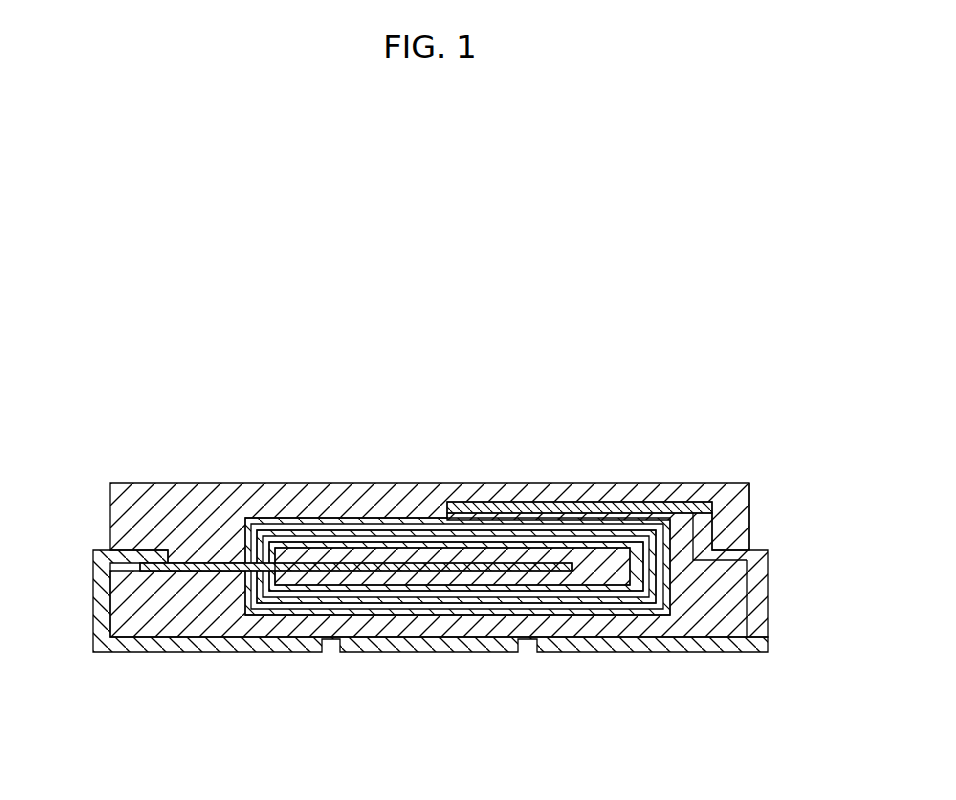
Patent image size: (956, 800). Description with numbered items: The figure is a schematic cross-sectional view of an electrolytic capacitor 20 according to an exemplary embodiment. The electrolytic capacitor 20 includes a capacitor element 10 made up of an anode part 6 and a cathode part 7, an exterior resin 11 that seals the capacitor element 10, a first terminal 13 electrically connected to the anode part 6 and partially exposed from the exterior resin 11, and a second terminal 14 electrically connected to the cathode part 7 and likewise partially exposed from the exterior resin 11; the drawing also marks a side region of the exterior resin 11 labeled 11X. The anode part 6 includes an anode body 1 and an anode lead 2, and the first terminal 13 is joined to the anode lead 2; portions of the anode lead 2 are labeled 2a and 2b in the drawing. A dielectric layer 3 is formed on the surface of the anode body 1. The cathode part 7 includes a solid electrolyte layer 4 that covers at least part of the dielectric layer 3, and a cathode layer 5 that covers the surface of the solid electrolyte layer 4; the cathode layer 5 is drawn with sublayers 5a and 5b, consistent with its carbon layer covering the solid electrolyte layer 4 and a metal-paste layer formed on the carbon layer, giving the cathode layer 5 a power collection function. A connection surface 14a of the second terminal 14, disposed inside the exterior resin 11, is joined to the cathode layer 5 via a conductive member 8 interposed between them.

The anode body 1 is at (430, 556).
The anode lead 2 is at (385, 568).
The electrode layer 2a is at (497, 566).
The lead electrode 2b is at (197, 569).
The dielectric layer 3 is at (355, 540).
The solid electrolyte layer 4 is at (322, 533).
The cathode layer 5 is at (303, 433).
The inner outer layer 5a is at (284, 527).
The outermost layer 5b is at (263, 521).
The anode part 6 is at (357, 433).
The cathode part 7 is at (235, 384).
The conductive member 8 is at (508, 508).
The capacitor element 10 is at (235, 339).
The exterior resin 11 is at (190, 500).
The housing side surface 11X is at (755, 508).
The first terminal 13 is at (97, 615).
The second terminal 14 is at (473, 536).
The connection surface 14a is at (588, 512).
The electrolytic capacitor 20 is at (667, 414).